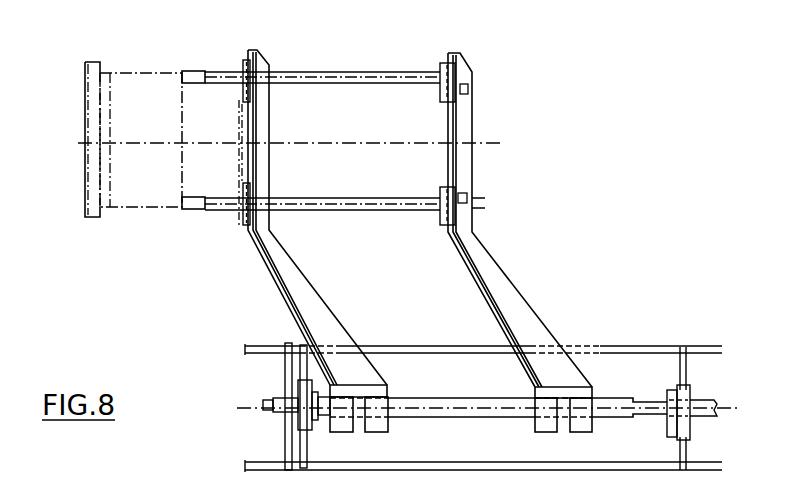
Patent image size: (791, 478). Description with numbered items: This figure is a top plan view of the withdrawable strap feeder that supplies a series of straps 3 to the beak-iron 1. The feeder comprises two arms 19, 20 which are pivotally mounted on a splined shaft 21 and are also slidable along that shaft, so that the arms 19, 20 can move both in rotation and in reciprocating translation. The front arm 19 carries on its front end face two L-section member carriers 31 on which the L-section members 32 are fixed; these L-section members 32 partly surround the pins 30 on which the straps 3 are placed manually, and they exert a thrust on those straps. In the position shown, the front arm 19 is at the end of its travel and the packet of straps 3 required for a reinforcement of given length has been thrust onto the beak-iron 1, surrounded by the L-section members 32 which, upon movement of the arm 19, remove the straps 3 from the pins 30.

The straps 3 is at (114, 70).
The beak-iron 1 is at (140, 92).
The L-section members 32 is at (213, 72).
The L-section member carriers 31 is at (246, 53).
The pins 30 is at (315, 72).
The front arm 19 is at (262, 172).
The arm 20 is at (453, 165).
The splined shaft 21 is at (445, 412).